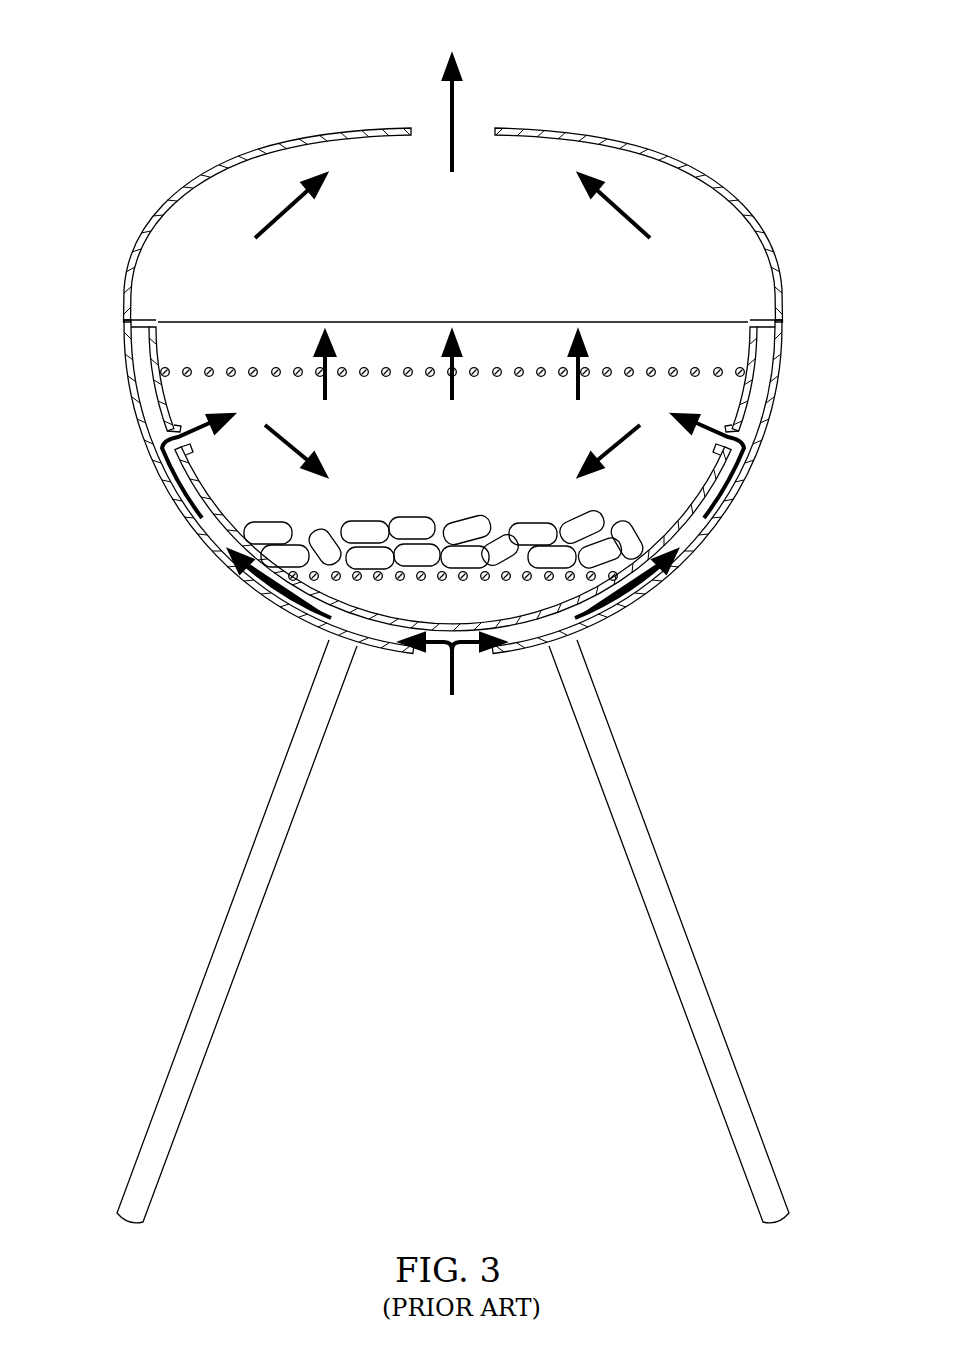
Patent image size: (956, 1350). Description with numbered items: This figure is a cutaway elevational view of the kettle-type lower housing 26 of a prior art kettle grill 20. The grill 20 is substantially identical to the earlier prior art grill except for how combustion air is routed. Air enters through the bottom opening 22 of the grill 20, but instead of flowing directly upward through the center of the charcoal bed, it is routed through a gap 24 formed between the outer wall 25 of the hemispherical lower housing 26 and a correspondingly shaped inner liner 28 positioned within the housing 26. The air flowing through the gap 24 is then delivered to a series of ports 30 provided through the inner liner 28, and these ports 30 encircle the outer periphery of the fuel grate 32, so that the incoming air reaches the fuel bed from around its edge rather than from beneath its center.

The kettle grill 20 is at (437, 614).
The bottom opening 22 is at (475, 675).
The gap 24 is at (217, 542).
The outer wall 25 is at (747, 490).
The hemispherical lower housing 26 is at (128, 412).
The inner liner 28 is at (223, 517).
The ports 30 is at (200, 445).
The fuel grate 32 is at (412, 577).